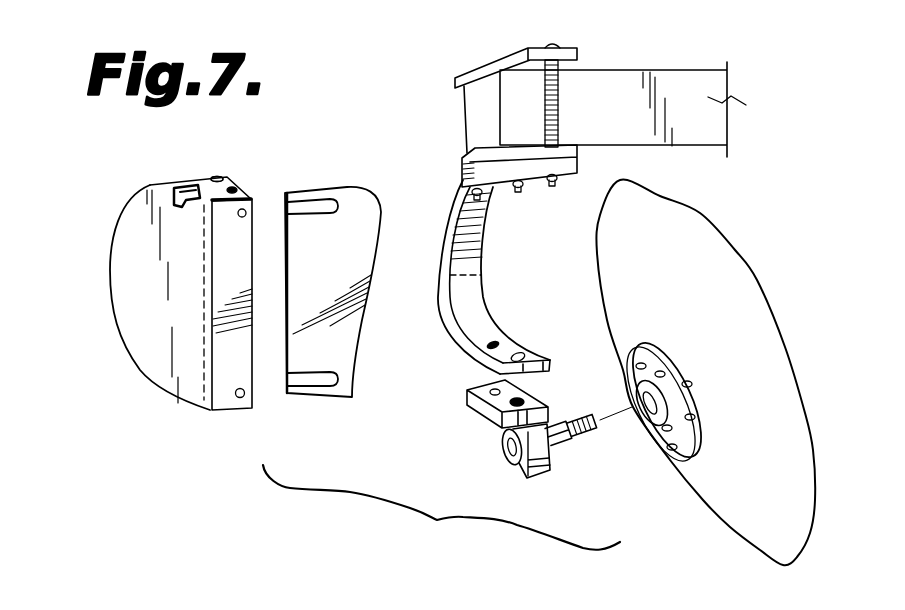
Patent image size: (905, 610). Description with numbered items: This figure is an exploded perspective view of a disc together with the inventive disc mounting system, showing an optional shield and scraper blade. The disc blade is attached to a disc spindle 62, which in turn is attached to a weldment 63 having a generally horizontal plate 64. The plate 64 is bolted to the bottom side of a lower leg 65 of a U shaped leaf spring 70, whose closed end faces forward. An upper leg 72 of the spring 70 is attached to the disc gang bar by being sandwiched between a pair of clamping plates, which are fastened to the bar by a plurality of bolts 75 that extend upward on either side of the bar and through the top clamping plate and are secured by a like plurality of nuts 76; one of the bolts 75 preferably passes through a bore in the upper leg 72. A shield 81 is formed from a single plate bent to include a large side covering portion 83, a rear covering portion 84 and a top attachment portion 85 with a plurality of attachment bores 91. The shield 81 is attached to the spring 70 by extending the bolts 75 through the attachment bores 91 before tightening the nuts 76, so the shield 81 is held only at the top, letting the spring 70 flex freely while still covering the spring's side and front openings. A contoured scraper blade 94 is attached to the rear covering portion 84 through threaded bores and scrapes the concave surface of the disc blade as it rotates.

The disc spindle 62 is at (500, 455).
The weldment 63 is at (535, 480).
The horizontal plate 64 is at (477, 408).
The lower leg 65 is at (470, 355).
The U shaped leaf spring 70 is at (412, 318).
The upper leg 72 is at (563, 152).
The bolts 75 is at (570, 70).
The nuts 76 is at (552, 184).
The shield 81 is at (116, 381).
The side covering portion 83 is at (135, 288).
The rear covering portion 84 is at (218, 390).
The top attachment portion 85 is at (195, 180).
The attachment bores 91 is at (220, 175).
The scraper blade 94 is at (355, 200).